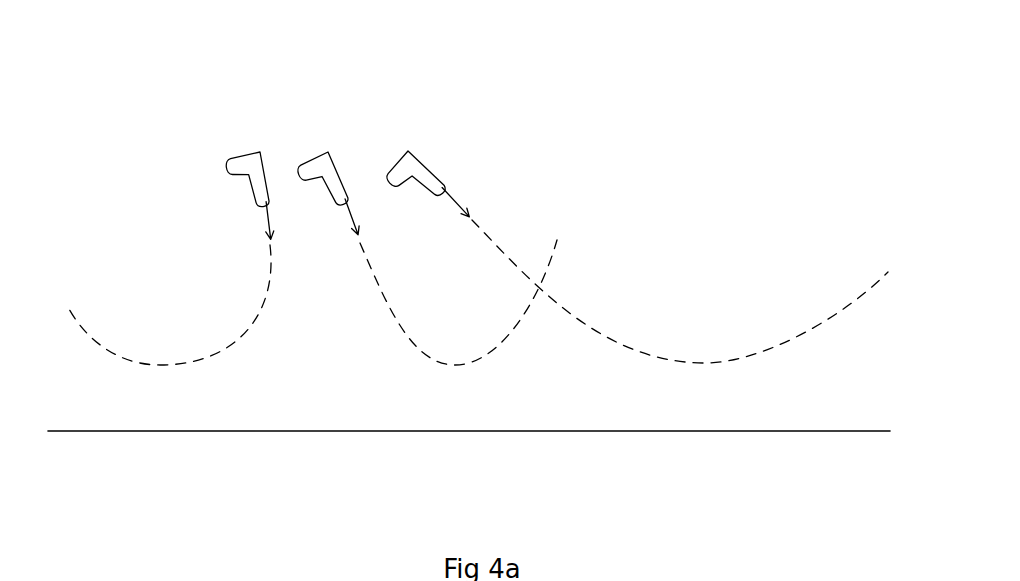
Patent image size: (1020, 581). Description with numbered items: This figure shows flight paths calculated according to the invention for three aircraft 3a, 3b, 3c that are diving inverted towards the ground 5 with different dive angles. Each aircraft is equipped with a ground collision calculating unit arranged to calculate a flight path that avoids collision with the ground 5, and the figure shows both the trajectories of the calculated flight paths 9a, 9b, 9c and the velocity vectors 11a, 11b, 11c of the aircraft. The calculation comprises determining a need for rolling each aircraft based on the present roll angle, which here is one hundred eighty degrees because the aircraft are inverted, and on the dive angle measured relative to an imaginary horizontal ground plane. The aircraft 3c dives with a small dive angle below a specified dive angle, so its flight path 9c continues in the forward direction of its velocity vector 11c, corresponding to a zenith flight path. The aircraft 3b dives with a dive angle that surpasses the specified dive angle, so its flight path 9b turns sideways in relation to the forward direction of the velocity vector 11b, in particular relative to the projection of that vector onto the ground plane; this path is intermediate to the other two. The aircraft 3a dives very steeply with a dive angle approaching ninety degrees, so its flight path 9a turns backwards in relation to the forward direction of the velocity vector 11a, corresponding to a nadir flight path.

The aircraft 3a is at (228, 158).
The aircraft 3b is at (302, 160).
The aircraft 3c is at (390, 165).
The velocity vector 11a is at (267, 226).
The velocity vector 11b is at (347, 220).
The velocity vector 11c is at (452, 197).
The flight path 9a is at (888, 275).
The flight path 9b is at (550, 255).
The flight path 9c is at (68, 308).
The ground 5 is at (550, 431).